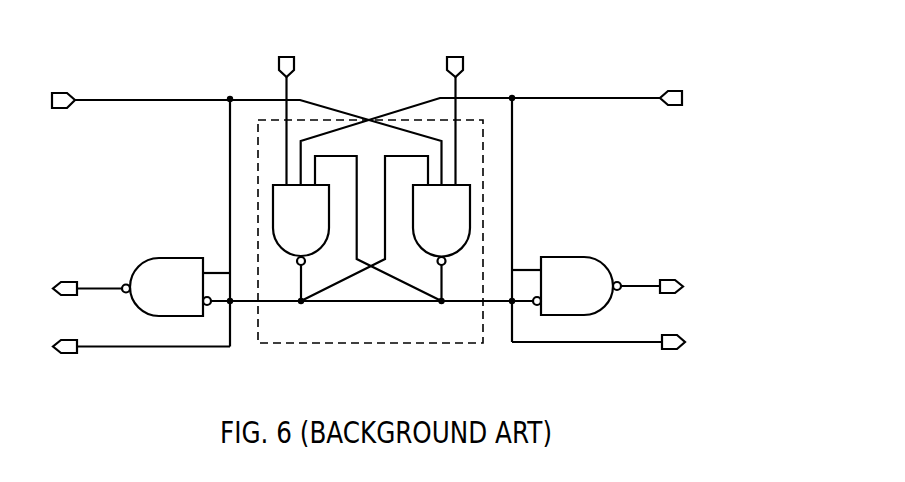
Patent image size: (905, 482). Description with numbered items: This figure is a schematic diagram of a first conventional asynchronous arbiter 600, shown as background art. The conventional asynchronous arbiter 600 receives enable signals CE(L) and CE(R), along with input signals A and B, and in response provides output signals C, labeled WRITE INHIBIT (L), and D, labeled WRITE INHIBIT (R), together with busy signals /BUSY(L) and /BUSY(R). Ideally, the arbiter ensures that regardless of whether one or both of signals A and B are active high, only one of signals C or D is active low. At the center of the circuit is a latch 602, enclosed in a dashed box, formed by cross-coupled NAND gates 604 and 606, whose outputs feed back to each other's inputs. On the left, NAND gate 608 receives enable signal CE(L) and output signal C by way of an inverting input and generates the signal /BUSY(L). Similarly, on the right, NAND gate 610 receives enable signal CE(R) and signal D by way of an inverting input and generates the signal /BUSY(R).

The conventional asynchronous arbiter 600 is at (533, 55).
The latch 602 is at (483, 153).
The NAND gate 604 is at (301, 225).
The NAND gate 606 is at (441, 225).
The NAND gate 608 is at (176, 287).
The NAND gate 610 is at (566, 286).